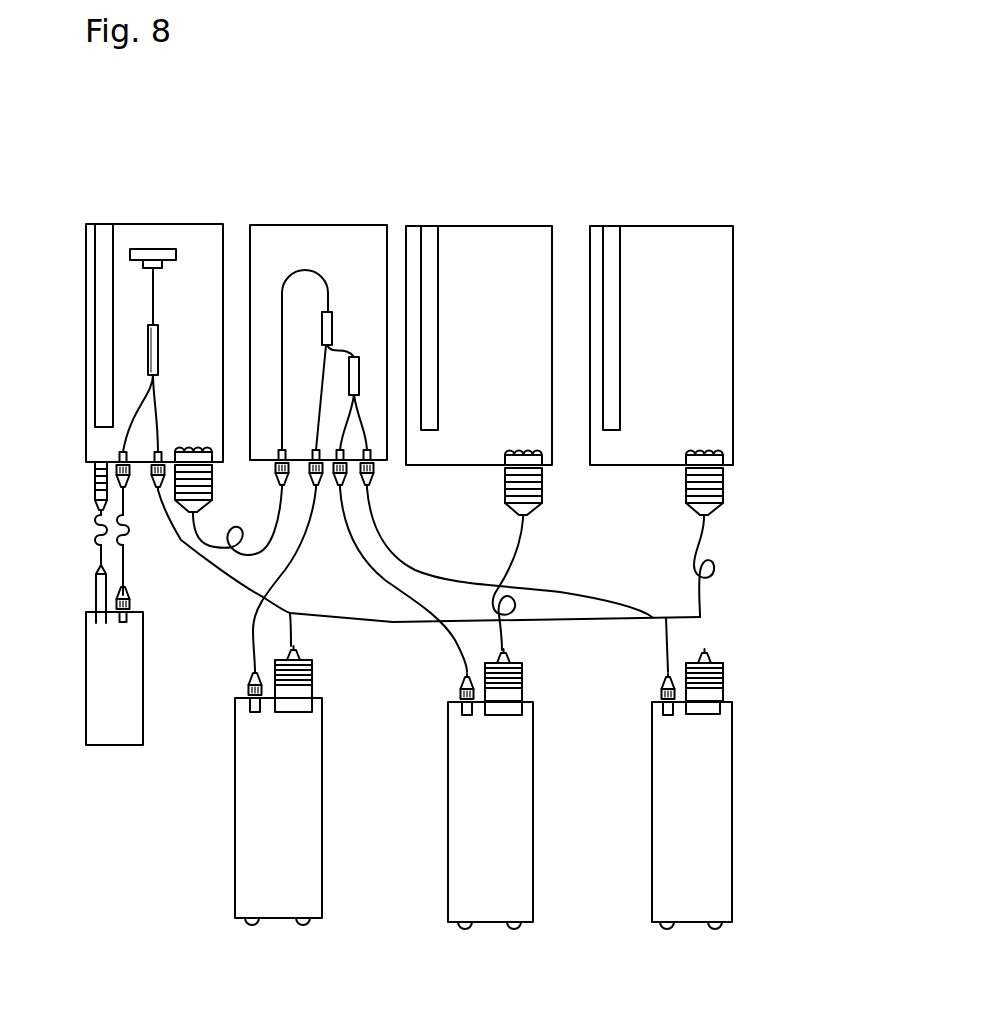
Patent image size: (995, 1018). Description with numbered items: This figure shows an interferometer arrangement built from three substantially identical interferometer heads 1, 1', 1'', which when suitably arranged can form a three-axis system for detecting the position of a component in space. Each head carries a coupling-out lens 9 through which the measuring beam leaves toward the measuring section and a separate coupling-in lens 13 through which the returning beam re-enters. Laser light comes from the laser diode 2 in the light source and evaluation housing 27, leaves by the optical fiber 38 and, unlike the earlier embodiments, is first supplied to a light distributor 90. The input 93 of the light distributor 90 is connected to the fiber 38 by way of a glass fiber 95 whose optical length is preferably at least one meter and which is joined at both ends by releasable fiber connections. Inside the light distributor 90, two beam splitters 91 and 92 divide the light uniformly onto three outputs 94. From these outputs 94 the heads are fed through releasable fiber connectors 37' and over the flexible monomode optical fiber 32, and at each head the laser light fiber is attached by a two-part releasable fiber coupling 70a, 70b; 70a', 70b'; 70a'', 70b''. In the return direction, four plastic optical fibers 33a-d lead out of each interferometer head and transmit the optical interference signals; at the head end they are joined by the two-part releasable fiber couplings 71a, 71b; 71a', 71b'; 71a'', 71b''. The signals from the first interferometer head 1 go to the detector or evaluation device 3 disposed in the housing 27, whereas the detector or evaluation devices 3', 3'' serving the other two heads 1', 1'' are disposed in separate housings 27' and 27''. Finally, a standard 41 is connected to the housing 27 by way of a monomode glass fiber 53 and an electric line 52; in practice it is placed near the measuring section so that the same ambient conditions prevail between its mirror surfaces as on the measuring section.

The interferometer head 1 is at (241, 808).
The interferometer head 1' is at (468, 812).
The interferometer head 1'' is at (670, 812).
The laser diode 2 is at (143, 253).
The photoelectric detector device 3 is at (71, 325).
The detector or evaluation device 3' is at (441, 273).
The detector or evaluation device 3'' is at (630, 273).
The coupling-out lens 9 is at (302, 928).
The coupling-in lens 13 is at (250, 928).
The light source and evaluation housing 27 is at (165, 310).
The housing 27' is at (481, 290).
The housing 27'' is at (664, 290).
The flexible monomode optical fiber 32 is at (252, 632).
The plastic optical fibers 33a-d is at (488, 598).
The releasable fiber connectors 37' is at (387, 499).
The optical fiber 38 is at (158, 427).
The standard 41 is at (100, 680).
The electric line 52 is at (97, 533).
The monomode glass fiber 53 is at (122, 562).
The fiber coupling part 70a is at (212, 758).
The fiber coupling part 70b is at (178, 744).
The fiber coupling part 70a' is at (423, 755).
The fiber coupling part 70b' is at (422, 696).
The fiber coupling part 70a'' is at (624, 750).
The fiber coupling part 70b'' is at (630, 684).
The fiber coupling part 71a is at (337, 730).
The fiber coupling part 71b is at (338, 672).
The fiber coupling part 71a' is at (550, 732).
The fiber coupling part 71b' is at (550, 670).
The fiber coupling part 71a'' is at (743, 735).
The fiber coupling part 71b'' is at (741, 660).
The light distributor 90 is at (288, 225).
The beam splitter 91 is at (331, 311).
The beam splitter 92 is at (356, 356).
The input 93 is at (280, 452).
The outputs 94 is at (372, 463).
The glass fiber 95 is at (181, 541).